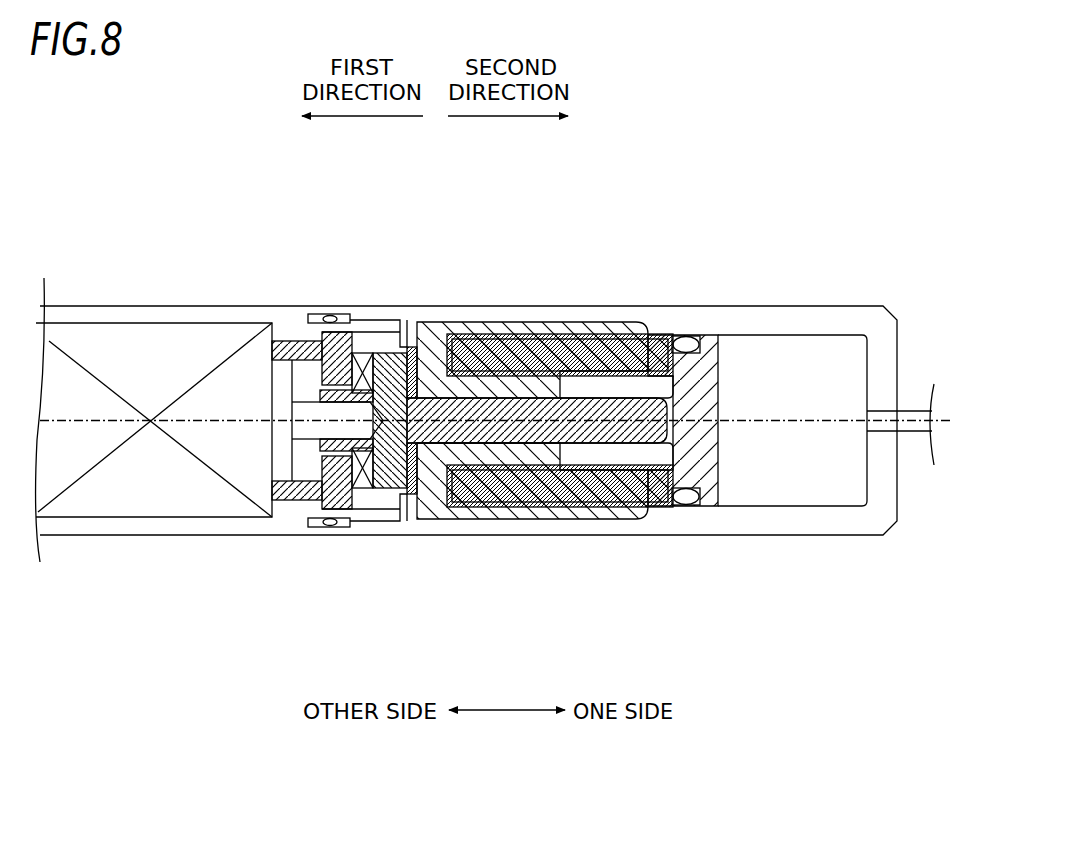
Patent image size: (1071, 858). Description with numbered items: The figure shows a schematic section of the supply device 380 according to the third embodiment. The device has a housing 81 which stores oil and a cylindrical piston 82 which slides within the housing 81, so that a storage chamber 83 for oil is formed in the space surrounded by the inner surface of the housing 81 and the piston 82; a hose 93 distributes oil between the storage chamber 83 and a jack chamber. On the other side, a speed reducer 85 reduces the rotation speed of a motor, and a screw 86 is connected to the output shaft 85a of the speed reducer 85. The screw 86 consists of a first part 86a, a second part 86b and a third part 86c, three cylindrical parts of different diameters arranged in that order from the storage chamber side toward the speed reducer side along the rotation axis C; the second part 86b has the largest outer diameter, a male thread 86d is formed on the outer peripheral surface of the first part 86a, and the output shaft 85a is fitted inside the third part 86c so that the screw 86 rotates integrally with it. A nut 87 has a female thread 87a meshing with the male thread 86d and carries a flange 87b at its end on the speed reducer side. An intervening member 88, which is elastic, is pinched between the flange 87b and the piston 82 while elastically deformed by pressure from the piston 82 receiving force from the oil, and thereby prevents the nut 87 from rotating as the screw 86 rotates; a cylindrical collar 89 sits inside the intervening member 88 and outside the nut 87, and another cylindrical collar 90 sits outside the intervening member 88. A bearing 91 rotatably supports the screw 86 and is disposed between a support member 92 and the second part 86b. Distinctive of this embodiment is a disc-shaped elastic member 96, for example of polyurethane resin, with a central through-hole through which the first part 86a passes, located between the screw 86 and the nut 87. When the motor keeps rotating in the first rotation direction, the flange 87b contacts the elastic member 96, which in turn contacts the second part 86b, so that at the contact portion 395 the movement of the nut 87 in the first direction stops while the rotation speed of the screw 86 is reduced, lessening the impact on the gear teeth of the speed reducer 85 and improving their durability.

The supply device 380 is at (661, 187).
The housing 81 is at (793, 306).
The piston 82 is at (703, 335).
The storage chamber 83 is at (805, 397).
The speed reducer 85 is at (133, 323).
The output shaft 85a is at (338, 392).
The screw 86 is at (540, 218).
The first part 86a is at (500, 390).
The second part 86b is at (365, 355).
The third part 86c is at (343, 380).
The male thread 86d is at (597, 390).
The nut 87 is at (480, 467).
The female thread 87a is at (497, 470).
The flange 87b is at (414, 500).
The intervening member 88 is at (548, 508).
The collar 89 is at (592, 505).
The collar 90 is at (618, 515).
The bearing 91 is at (350, 512).
The support member 92 is at (310, 526).
The hose 93 is at (913, 410).
The elastic member 96 is at (412, 360).
The contact portion 395 is at (404, 501).
The rotation axis C is at (787, 423).